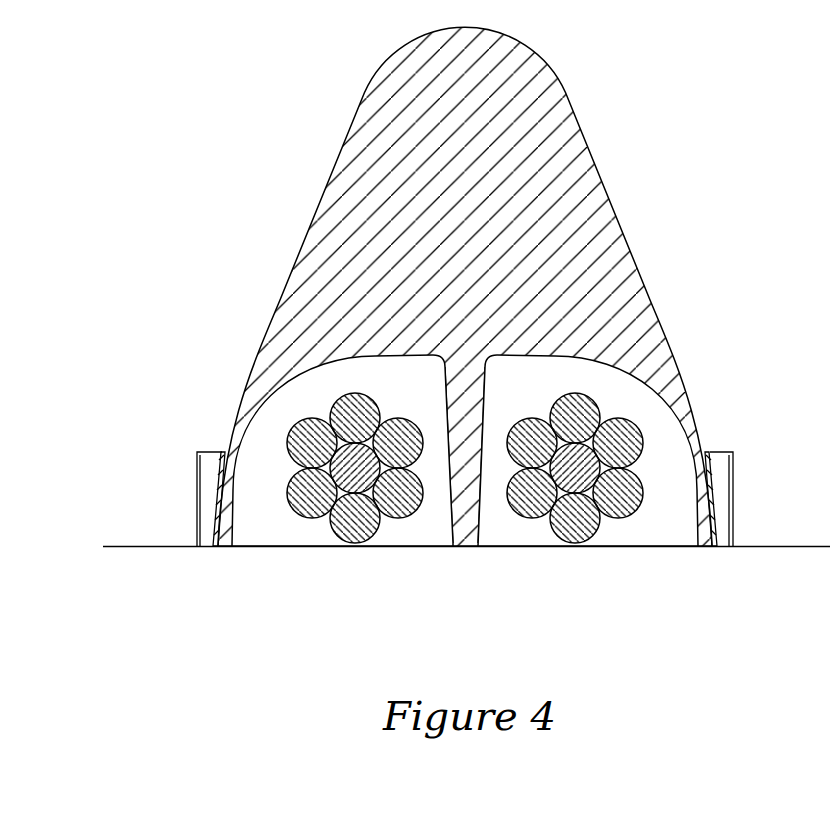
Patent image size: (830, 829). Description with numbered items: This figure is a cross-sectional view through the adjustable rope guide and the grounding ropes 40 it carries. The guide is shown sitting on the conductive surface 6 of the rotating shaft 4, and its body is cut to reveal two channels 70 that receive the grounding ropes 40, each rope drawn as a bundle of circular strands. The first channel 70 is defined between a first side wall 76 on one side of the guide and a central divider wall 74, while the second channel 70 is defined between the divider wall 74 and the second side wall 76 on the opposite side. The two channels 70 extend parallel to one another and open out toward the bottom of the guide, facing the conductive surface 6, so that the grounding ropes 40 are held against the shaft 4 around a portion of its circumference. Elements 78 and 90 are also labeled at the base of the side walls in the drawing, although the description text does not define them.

The rotating shaft 4 is at (475, 603).
The conductive surface 6 is at (123, 546).
The grounding ropes 40 is at (285, 418).
The channels 70 is at (305, 395).
The divider wall 74 is at (462, 428).
The side wall 76 is at (227, 440).
The right side flange 78 is at (703, 462).
The fastener 90 is at (207, 470).